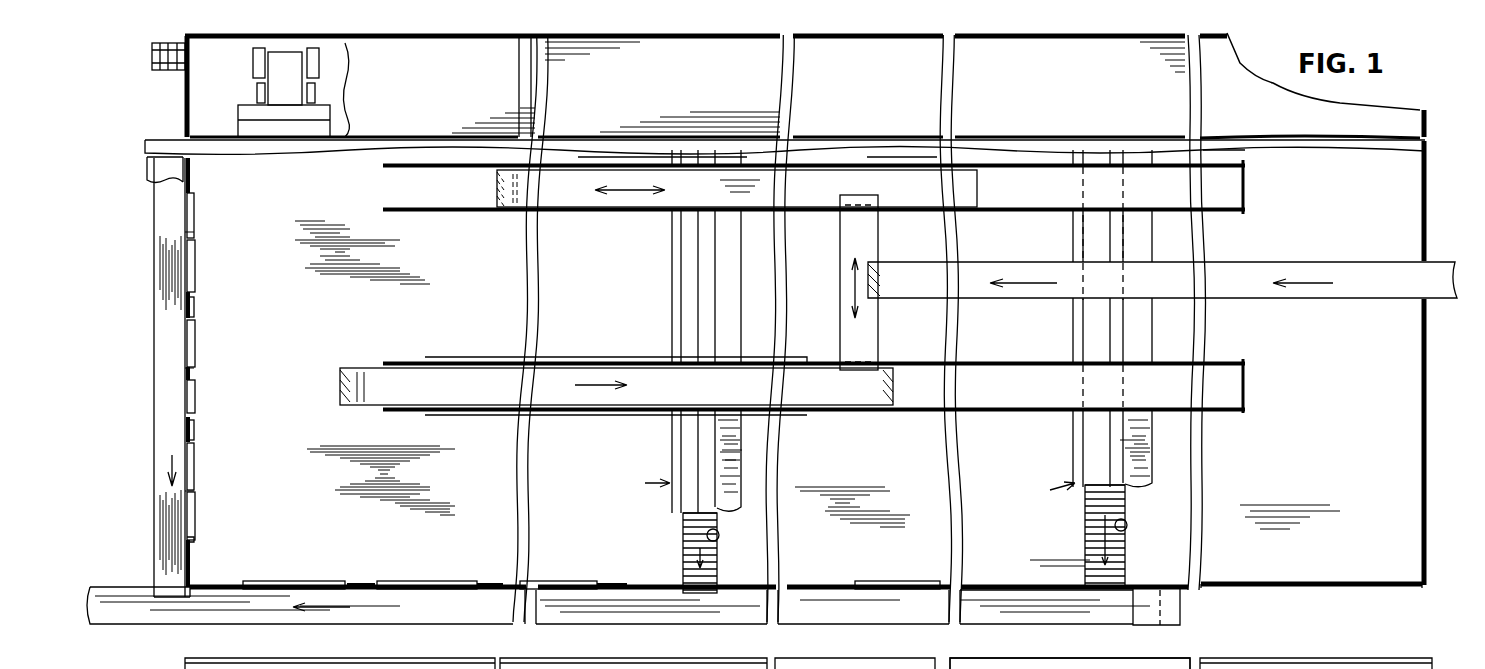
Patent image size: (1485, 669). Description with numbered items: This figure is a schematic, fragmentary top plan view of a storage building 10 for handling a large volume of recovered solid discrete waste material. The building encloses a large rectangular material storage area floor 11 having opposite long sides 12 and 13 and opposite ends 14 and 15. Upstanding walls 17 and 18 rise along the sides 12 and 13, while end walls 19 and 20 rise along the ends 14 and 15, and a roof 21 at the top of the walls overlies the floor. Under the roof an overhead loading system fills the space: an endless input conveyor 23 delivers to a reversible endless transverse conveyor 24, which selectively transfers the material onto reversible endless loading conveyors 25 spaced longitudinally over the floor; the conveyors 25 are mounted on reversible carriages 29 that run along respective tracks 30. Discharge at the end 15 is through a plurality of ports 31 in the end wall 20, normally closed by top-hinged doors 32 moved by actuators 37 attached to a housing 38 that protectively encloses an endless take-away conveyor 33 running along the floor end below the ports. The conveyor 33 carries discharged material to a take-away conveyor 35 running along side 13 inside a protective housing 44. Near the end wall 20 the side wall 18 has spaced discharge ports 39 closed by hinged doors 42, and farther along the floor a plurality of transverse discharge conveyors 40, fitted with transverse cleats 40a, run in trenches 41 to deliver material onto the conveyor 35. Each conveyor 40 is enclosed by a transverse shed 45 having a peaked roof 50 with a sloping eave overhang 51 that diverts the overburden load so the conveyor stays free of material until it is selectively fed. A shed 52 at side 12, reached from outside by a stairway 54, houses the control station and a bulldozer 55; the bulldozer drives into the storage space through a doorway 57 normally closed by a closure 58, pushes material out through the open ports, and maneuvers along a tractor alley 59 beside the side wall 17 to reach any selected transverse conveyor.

The storage building 10 is at (130, 139).
The material storage area floor 11 is at (298, 349).
The side of floor 12 is at (905, 38).
The side of floor 13 is at (760, 600).
The end of floor 14 is at (1424, 390).
The end of floor 15 is at (185, 350).
The upstanding side wall 17 is at (960, 40).
The upstanding side wall 18 is at (862, 582).
The upstanding end wall 19 is at (1422, 483).
The upstanding end wall 20 is at (192, 306).
The roof 21 is at (993, 668).
The endless input conveyor 23 is at (1380, 270).
The reversible endless transverse conveyor 24 is at (866, 243).
The reversible endless loading conveyor 25 is at (565, 377).
The reversible carriage 29 is at (608, 211).
The track 30 is at (1010, 211).
The discharge port 31 is at (193, 198).
The door 32 is at (196, 268).
The endless take-away conveyor 33 is at (172, 438).
The take-away conveyor 35 is at (195, 606).
The actuator 37 is at (186, 238).
The housing 38 is at (165, 176).
The side discharge port 39 is at (255, 581).
The transverse discharge conveyor 40 is at (685, 548).
The transverse cleat 40a is at (688, 531).
The trench 41 is at (716, 538).
The closure door 42 is at (298, 582).
The protective housing 44 is at (1182, 610).
The shed 45 is at (838, 486).
The shed roof 50 is at (688, 442).
The sloping eave overhang 51 is at (735, 477).
The shed 52 is at (510, 92).
The stairway 54 is at (168, 62).
The bulldozer 55 is at (331, 94).
The doorway 57 is at (347, 140).
The closure 58 is at (575, 115).
The tractor alley 59 is at (805, 86).